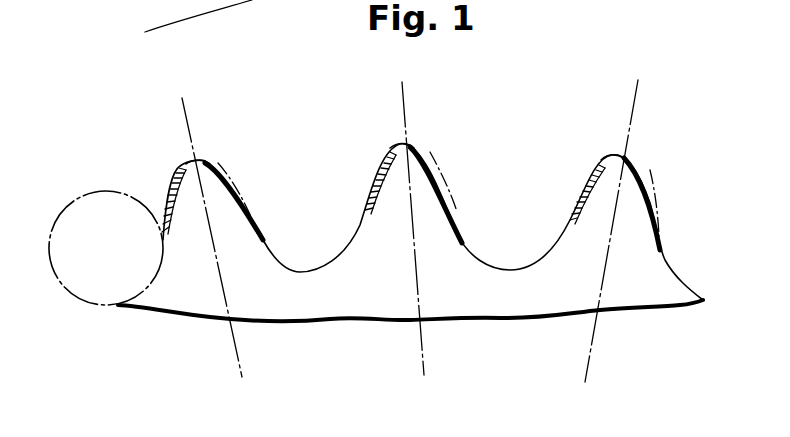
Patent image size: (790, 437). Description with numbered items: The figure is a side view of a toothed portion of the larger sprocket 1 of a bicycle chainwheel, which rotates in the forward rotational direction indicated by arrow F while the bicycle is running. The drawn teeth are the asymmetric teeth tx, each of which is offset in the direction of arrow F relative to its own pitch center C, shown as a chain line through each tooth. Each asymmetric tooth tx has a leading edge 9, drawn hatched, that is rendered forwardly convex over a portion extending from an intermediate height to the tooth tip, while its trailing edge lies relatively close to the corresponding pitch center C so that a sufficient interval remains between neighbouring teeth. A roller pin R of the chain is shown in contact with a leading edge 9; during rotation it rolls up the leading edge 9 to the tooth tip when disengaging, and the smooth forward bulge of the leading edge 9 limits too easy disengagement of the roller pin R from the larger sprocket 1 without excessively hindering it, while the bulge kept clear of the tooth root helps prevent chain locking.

The larger sprocket 1 is at (537, 97).
The leading edge 9 is at (166, 186).
The roller pin R is at (90, 190).
The pitch center C is at (183, 112).
The asymmetric tooth tx is at (401, 144).
The forward rotational direction F is at (145, 32).